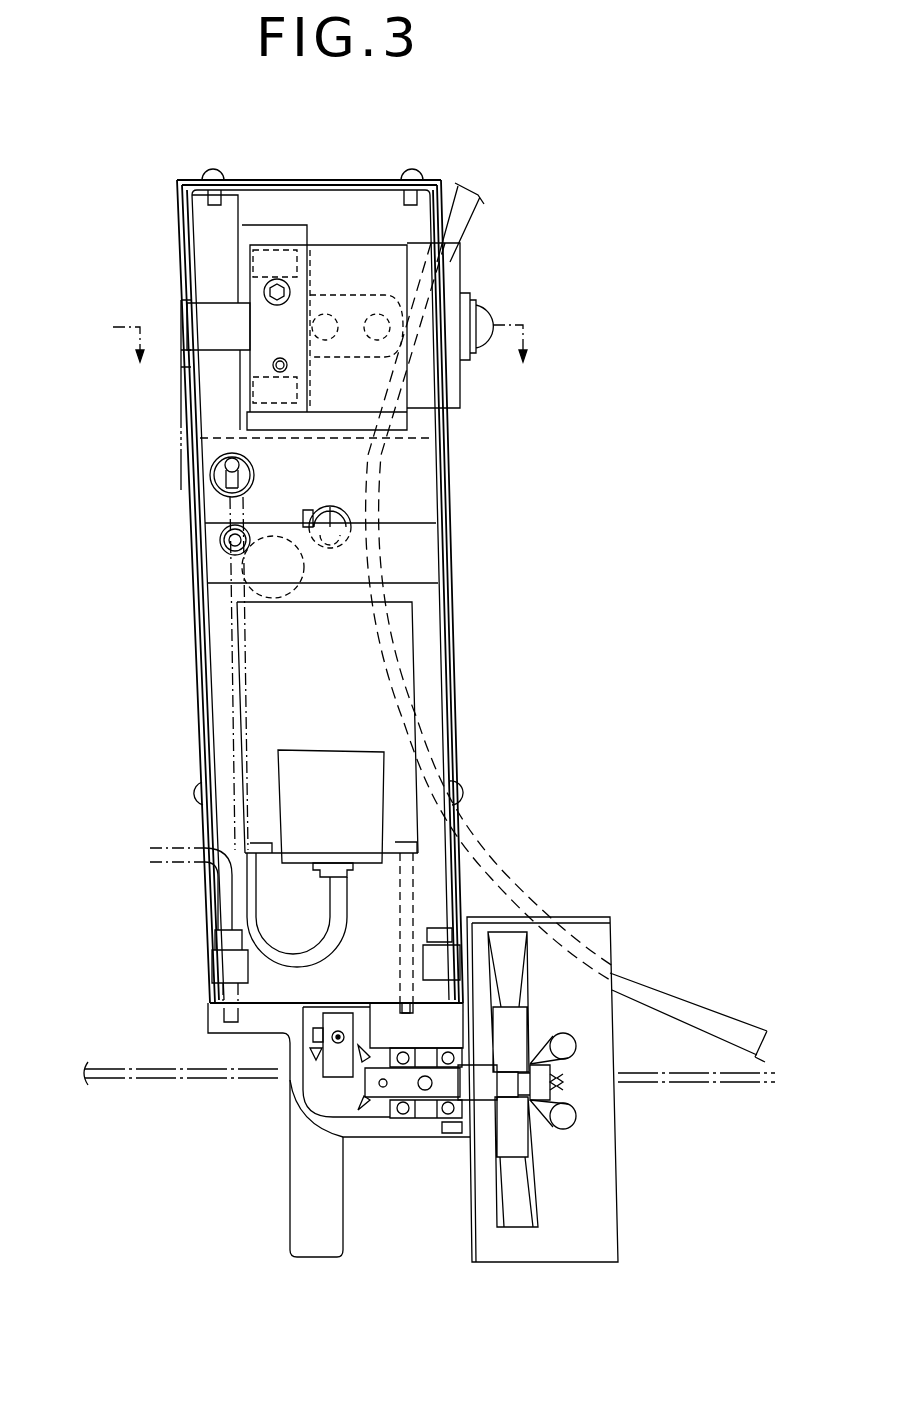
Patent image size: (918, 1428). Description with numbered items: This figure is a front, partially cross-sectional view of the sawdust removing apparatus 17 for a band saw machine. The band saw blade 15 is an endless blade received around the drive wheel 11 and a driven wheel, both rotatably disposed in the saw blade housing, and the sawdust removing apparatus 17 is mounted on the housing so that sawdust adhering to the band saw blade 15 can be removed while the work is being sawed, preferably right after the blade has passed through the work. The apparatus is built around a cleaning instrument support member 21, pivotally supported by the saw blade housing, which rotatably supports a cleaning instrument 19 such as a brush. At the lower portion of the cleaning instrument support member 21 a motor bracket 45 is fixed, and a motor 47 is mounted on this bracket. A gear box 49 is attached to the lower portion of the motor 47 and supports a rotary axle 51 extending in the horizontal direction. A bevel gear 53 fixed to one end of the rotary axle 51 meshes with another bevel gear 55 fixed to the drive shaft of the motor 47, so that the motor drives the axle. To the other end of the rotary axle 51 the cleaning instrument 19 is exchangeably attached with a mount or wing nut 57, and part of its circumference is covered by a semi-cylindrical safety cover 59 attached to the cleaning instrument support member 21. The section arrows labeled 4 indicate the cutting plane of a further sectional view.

The section line 4- 4 is at (318, 363).
The drive wheel 11 is at (695, 1045).
The band saw blade 15 is at (115, 1082).
The sawdust removing apparatus 17 is at (166, 712).
The cleaning instrument 19 is at (512, 1215).
The cleaning instrument support member 21 is at (200, 625).
The motor bracket 45 is at (215, 967).
The motor 47 is at (368, 680).
The gear box 49 is at (298, 1083).
The rotary axle 51 is at (443, 1085).
The bevel gear 53 is at (365, 1118).
The bevel gear 55 is at (312, 1050).
The mount nut 57 is at (570, 1118).
The safety cover 59 is at (608, 1250).